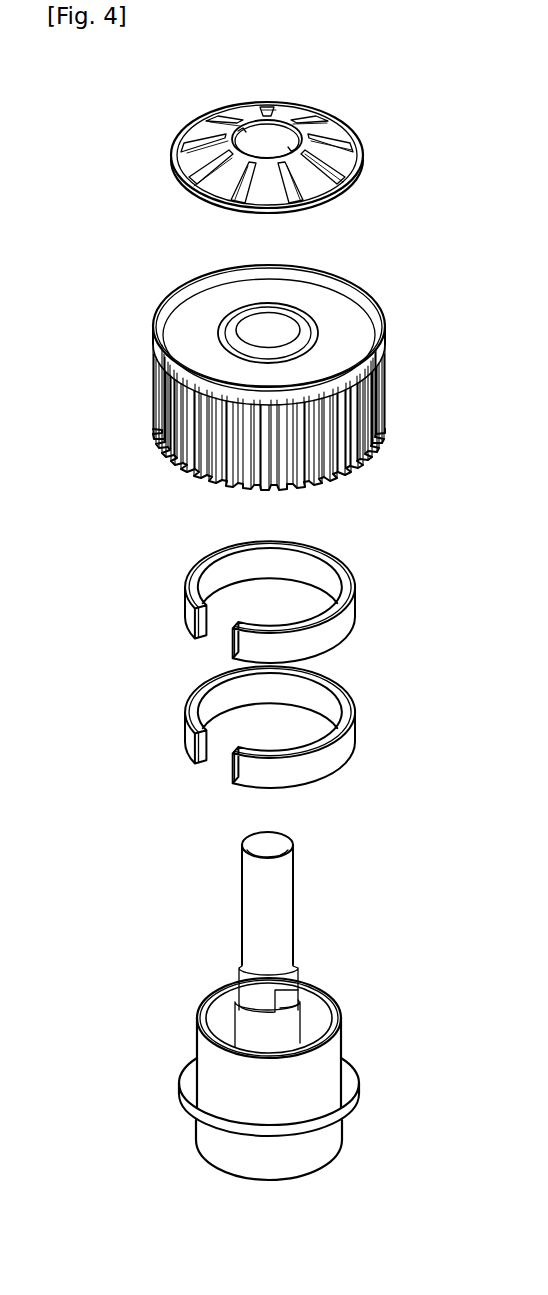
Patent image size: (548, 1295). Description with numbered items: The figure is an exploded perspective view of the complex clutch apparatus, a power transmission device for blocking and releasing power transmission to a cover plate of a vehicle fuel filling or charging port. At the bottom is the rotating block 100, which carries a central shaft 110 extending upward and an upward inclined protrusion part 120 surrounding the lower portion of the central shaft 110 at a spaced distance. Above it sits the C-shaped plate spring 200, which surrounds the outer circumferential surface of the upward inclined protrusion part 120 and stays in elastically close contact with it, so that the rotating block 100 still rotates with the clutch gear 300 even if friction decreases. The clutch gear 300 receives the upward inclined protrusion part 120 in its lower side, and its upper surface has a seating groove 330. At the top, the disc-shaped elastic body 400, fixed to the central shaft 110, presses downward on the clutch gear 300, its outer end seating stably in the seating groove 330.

The rotating block 100 is at (335, 1142).
The central shaft 110 is at (287, 892).
The upward inclined protrusion part 120 is at (335, 1042).
The C-shaped plate spring 200 is at (185, 688).
The clutch gear 300 is at (279, 367).
The seating groove 330 is at (200, 318).
The elastic body 400 is at (322, 123).